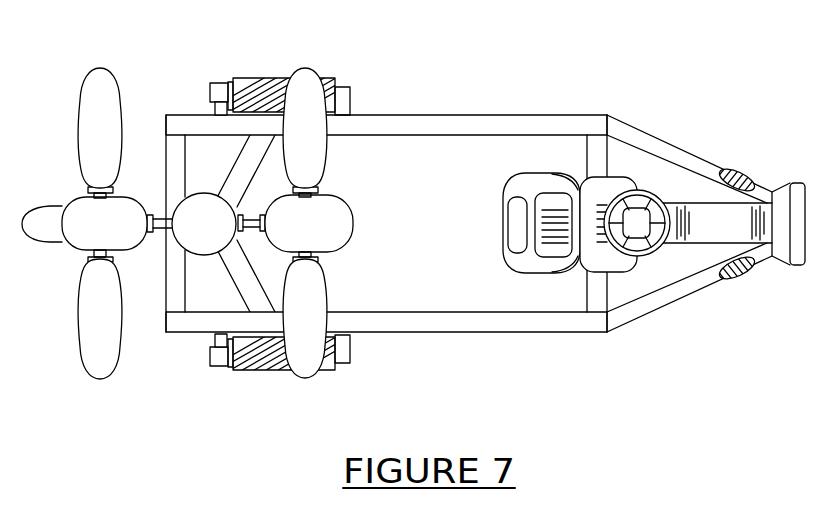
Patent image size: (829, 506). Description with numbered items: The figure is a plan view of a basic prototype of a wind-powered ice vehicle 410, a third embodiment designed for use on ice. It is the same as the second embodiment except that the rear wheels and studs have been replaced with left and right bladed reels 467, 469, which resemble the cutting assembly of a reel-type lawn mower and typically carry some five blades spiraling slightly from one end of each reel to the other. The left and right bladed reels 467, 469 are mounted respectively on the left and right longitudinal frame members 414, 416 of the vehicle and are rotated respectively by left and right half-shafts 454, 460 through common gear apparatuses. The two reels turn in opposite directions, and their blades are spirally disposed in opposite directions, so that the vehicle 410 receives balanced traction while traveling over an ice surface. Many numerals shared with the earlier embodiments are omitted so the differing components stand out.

The wind-powered ice vehicle 410 is at (413, 225).
The left longitudinal frame member 414 is at (524, 115).
The right longitudinal frame member 416 is at (526, 332).
The left half-shaft 454 is at (215, 107).
The right half-shaft 460 is at (215, 342).
The left bladed reel 467 is at (268, 58).
The right bladed reel 469 is at (258, 385).